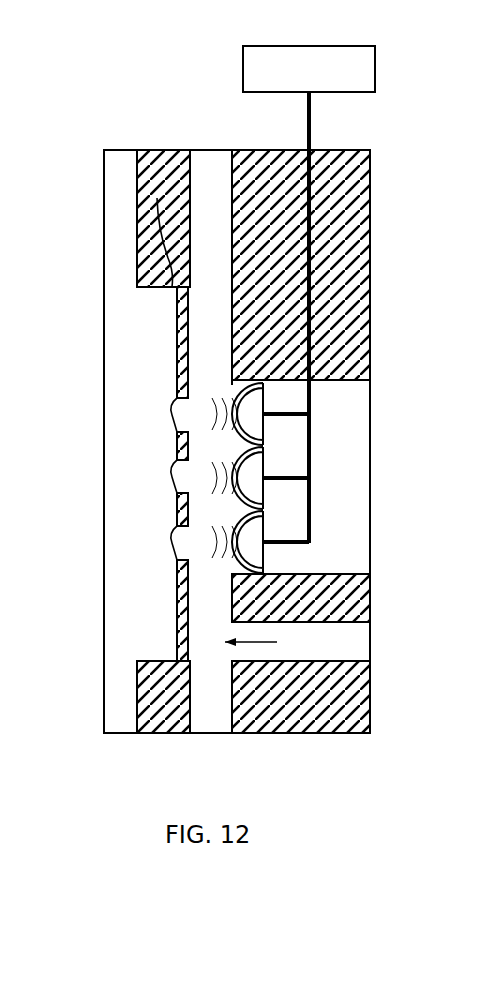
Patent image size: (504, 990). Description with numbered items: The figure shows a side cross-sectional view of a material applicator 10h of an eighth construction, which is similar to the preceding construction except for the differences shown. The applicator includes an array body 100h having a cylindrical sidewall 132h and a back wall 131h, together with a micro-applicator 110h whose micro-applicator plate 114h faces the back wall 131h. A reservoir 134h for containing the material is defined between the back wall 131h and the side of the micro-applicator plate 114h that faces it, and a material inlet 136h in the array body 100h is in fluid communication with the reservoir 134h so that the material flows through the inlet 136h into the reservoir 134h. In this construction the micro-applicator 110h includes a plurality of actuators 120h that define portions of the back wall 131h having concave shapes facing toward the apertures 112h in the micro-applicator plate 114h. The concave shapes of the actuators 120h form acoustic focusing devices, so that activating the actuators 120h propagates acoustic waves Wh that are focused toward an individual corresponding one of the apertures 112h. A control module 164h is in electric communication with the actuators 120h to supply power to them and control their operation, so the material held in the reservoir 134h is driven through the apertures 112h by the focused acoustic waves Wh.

The material applicator 10h is at (123, 157).
The control module 164h is at (243, 62).
The array body 100h is at (178, 152).
The sidewall 132h is at (166, 188).
The reservoir 134h is at (198, 352).
The micro-applicator plate 114h is at (173, 352).
The apertures 112h is at (177, 399).
The actuators 120h is at (241, 414).
The acoustic waves Wh is at (228, 420).
The back wall 131h is at (236, 600).
The material inlet 136h is at (327, 642).
The micro-applicator 110h is at (148, 615).